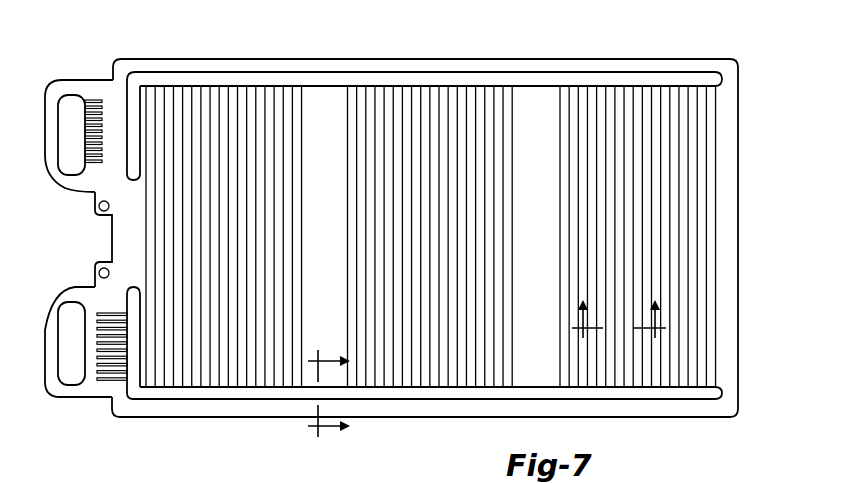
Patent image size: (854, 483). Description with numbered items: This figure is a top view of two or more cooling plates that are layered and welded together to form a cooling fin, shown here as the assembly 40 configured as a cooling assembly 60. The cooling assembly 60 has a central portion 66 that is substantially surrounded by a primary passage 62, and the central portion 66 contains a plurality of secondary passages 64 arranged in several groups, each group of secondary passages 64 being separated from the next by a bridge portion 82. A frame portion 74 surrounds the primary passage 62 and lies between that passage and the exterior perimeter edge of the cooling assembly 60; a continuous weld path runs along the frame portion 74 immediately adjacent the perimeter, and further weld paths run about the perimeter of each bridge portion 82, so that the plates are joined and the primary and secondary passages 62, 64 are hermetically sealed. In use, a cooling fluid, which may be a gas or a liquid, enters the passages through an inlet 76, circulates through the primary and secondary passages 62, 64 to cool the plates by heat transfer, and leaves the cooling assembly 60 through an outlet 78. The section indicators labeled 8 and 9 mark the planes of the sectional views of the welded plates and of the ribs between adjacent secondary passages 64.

The assembly 40 is at (418, 241).
The cooling assembly 60 is at (774, 160).
The primary passage 62 is at (616, 72).
The secondary passages 64 is at (310, 160).
The central portion 66 is at (186, 98).
The frame portion 74 is at (119, 240).
The inlet 76 is at (72, 130).
The outlet 78 is at (101, 393).
The bridge portion 82 is at (330, 100).
The section line 8 is at (329, 397).
The section line 9 is at (619, 334).